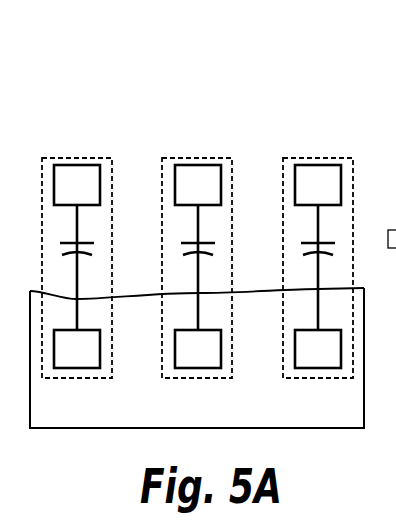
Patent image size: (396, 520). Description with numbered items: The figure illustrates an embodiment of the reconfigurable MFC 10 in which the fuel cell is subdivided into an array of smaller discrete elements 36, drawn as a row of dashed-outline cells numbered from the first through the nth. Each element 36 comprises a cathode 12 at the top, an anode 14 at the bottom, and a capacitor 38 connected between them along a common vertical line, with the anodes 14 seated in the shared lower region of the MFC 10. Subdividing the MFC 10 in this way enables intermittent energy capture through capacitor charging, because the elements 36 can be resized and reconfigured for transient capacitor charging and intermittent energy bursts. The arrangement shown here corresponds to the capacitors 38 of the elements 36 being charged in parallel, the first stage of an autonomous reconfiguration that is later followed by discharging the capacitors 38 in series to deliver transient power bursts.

The MFC 10 is at (147, 72).
The element 36 is at (316, 158).
The cathode 12 is at (90, 200).
The anode 14 is at (90, 364).
The capacitor 38 is at (181, 243).